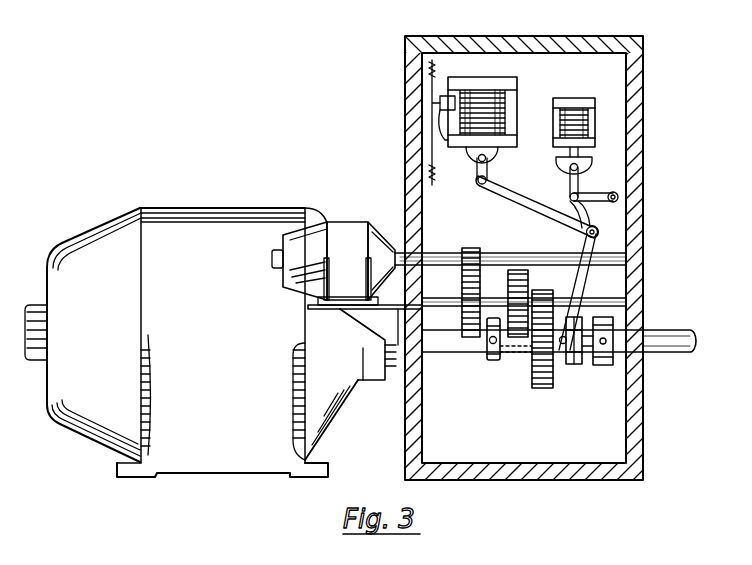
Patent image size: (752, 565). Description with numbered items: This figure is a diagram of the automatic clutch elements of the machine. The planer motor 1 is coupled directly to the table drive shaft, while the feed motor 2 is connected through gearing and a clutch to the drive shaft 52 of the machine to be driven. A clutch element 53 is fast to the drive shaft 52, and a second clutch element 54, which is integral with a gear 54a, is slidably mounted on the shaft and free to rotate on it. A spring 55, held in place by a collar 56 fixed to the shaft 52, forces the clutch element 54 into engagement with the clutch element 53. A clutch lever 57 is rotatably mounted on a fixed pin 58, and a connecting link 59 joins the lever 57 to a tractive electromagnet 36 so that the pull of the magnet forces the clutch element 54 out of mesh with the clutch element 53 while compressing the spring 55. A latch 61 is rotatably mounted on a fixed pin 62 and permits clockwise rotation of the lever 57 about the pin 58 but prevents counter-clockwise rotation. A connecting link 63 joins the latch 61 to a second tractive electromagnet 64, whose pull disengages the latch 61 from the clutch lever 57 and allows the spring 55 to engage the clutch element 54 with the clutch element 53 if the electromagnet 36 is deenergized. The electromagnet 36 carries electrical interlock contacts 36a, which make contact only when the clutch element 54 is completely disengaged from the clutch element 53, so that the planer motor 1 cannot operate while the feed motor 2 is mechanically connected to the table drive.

The planer motor 1 is at (180, 207).
The feed motor 2 is at (343, 222).
The tractive electromagnet 36 is at (490, 77).
The electrical interlock contacts 36a is at (432, 122).
The drive shaft 52 is at (694, 352).
The clutch element 53 is at (605, 367).
The clutch element 54 is at (574, 366).
The gear 54a is at (544, 390).
The spring 55 is at (515, 352).
The collar 56 is at (487, 356).
The clutch lever 57 is at (582, 251).
The fixed pin 58 is at (599, 232).
The connecting link 59 is at (477, 182).
The latch 61 is at (594, 196).
The fixed pin 62 is at (617, 197).
The connecting link 63 is at (568, 188).
The tractive electromagnet 64 is at (574, 98).